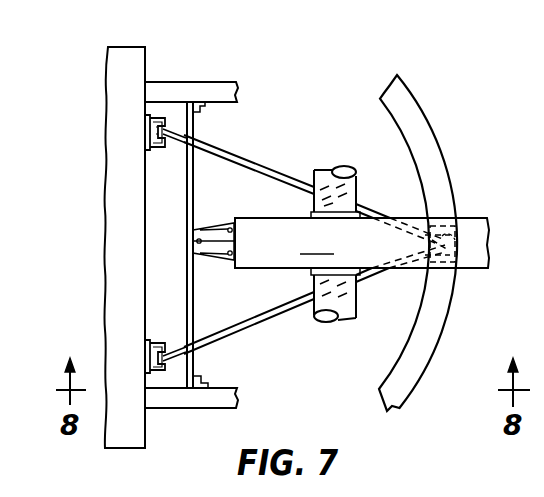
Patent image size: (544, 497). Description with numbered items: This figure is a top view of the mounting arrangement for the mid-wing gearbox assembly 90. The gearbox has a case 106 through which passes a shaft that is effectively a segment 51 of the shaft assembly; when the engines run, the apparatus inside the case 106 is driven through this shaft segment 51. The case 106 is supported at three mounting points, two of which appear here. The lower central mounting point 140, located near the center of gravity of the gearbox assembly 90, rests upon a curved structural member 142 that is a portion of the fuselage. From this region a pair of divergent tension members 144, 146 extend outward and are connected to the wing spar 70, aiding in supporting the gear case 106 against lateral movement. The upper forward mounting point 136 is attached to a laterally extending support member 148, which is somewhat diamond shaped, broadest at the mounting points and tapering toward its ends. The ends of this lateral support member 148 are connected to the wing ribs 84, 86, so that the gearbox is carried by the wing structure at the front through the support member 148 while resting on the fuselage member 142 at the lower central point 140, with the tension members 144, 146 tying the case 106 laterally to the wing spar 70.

The wing spar 70 is at (110, 155).
The wing rib 86 is at (188, 82).
The wing rib 84 is at (190, 408).
The laterally extending support member 148 is at (194, 183).
The tension member 146 is at (255, 162).
The tension member 144 is at (262, 322).
The upper forward mounting point 136 is at (202, 257).
The case 106 is at (362, 243).
The shaft segment 51 is at (356, 304).
The curved structural member 142 is at (442, 160).
The lower central mounting point 140 is at (460, 224).
The mid-wing gearbox assembly 90 is at (455, 95).